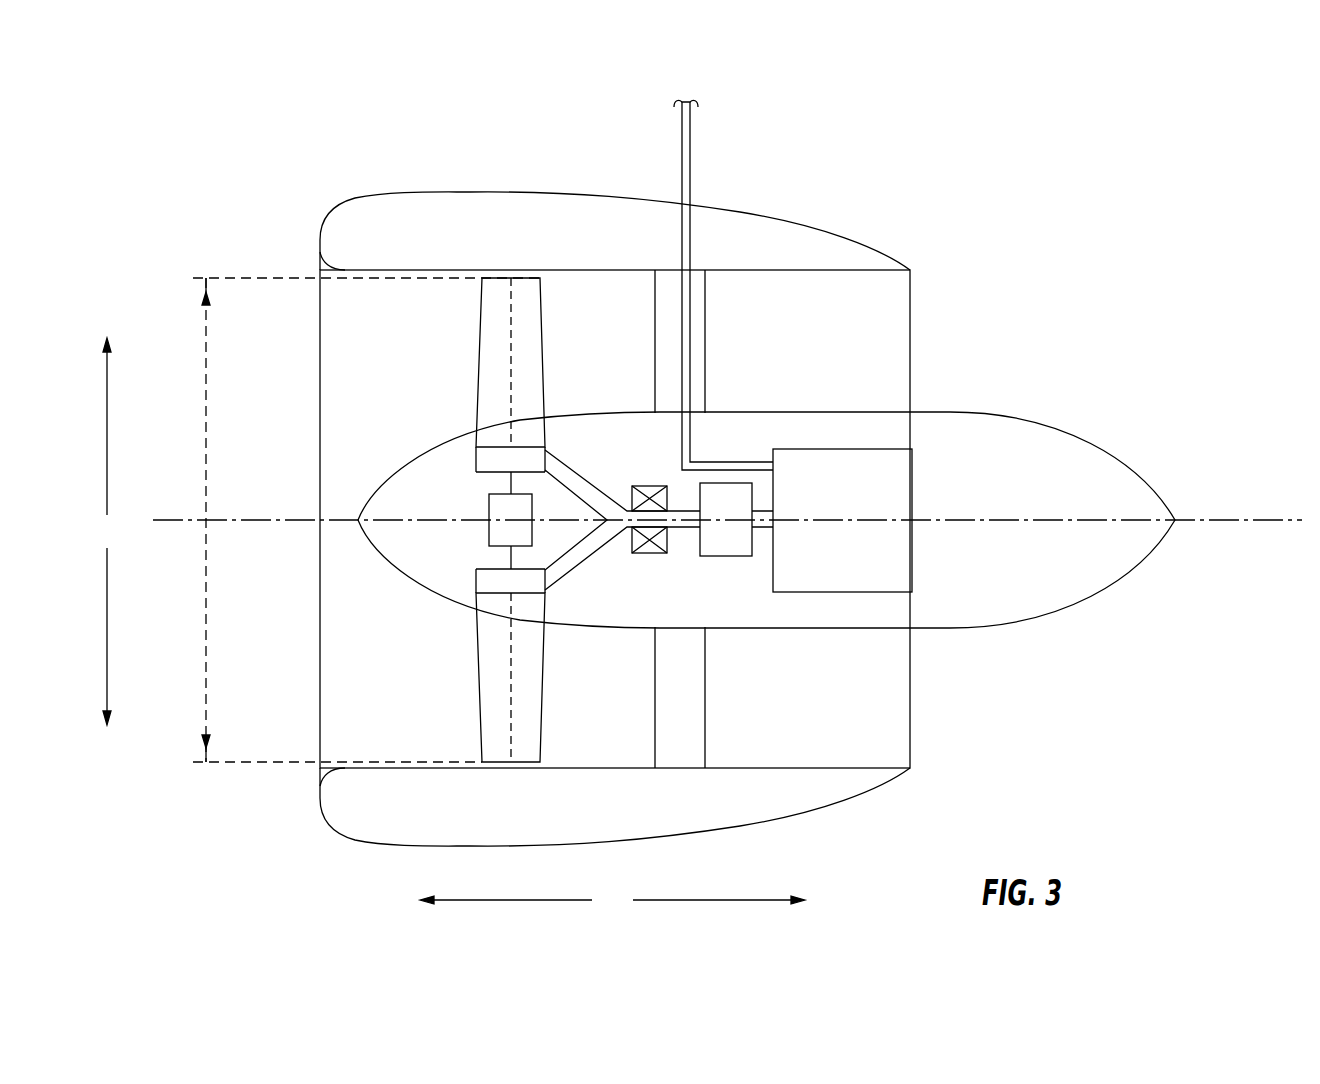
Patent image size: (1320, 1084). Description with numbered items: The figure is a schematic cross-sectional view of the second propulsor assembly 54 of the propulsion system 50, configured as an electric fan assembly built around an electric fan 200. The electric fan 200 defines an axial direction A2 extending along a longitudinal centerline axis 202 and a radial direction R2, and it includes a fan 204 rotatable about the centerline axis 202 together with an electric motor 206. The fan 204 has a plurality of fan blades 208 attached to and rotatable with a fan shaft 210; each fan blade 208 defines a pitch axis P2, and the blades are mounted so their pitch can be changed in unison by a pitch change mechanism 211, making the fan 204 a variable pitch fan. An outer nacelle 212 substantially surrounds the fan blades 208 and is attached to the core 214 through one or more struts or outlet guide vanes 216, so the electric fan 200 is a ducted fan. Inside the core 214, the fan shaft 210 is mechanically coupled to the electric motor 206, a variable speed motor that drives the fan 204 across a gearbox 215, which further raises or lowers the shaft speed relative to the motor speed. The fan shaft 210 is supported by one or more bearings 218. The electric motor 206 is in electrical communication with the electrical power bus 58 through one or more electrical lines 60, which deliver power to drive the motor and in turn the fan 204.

The propulsion system 50 is at (983, 240).
The second propulsor assembly 54 is at (615, 473).
The electrical power bus 58 is at (754, 278).
The electrical lines 60 is at (690, 372).
The electric fan 200 is at (385, 128).
The longitudinal centerline axis 202 is at (1235, 520).
The fan 204 is at (425, 520).
The electric motor 206 is at (912, 505).
The fan blades 208 is at (497, 520).
The fan shaft 210 is at (679, 529).
The pitch change mechanism 211 is at (489, 538).
The outer nacelle 212 is at (773, 220).
The core 214 is at (1008, 418).
The gearbox 215 is at (730, 556).
The struts or outlet guide vanes 216 is at (705, 728).
The bearings 218 is at (647, 486).
The pitch axis P2 is at (511, 348).
The radial direction R2 is at (320, 520).
The axial direction A2 is at (612, 902).